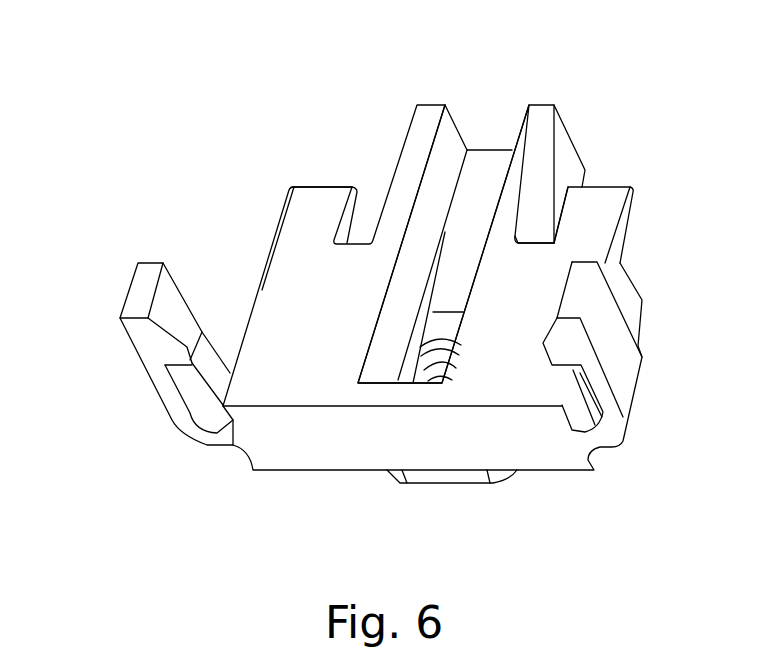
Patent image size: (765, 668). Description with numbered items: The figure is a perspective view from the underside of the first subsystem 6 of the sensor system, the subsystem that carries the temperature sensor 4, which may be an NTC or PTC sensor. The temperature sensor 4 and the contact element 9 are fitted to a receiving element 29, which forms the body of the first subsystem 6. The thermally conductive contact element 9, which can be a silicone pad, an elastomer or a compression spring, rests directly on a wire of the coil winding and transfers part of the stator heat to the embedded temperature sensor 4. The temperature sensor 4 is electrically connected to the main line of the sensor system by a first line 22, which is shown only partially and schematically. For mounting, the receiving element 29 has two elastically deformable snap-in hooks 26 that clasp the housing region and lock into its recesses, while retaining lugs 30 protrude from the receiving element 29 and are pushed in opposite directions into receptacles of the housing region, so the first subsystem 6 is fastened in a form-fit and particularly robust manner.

The first subsystem 6 is at (593, 78).
The temperature sensor 4 is at (416, 290).
The first line 22 is at (441, 272).
The retaining lugs 30 is at (318, 215).
The receiving element 29 is at (522, 275).
The snap-in hooks 26 is at (143, 291).
The contact element 9 is at (445, 476).